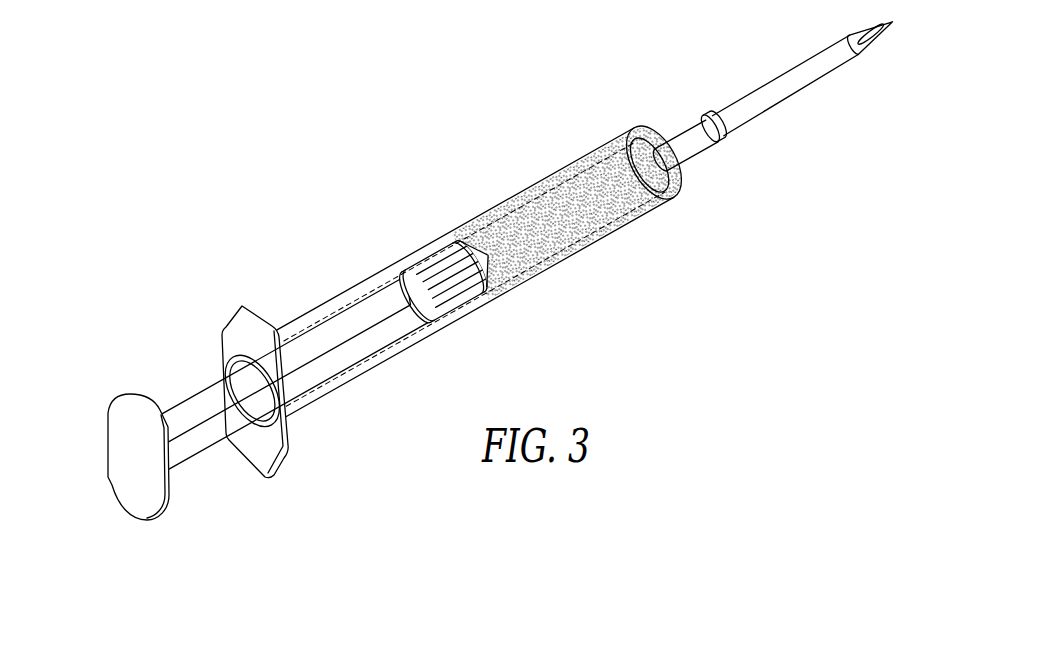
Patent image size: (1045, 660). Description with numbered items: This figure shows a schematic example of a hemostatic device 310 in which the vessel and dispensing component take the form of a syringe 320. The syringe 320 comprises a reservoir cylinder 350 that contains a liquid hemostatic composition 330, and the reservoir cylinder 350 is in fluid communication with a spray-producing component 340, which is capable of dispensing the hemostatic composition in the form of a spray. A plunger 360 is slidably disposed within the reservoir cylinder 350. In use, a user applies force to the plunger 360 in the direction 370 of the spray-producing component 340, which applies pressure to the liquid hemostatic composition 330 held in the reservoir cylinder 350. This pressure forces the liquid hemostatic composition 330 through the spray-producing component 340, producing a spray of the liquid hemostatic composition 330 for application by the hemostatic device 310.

The hemostatic device 310 is at (286, 139).
The syringe 320 is at (291, 503).
The liquid hemostatic composition 330 is at (568, 187).
The spray-producing component 340 is at (755, 155).
The reservoir cylinder 350 is at (600, 304).
The plunger 360 is at (190, 381).
The direction 370 is at (125, 466).